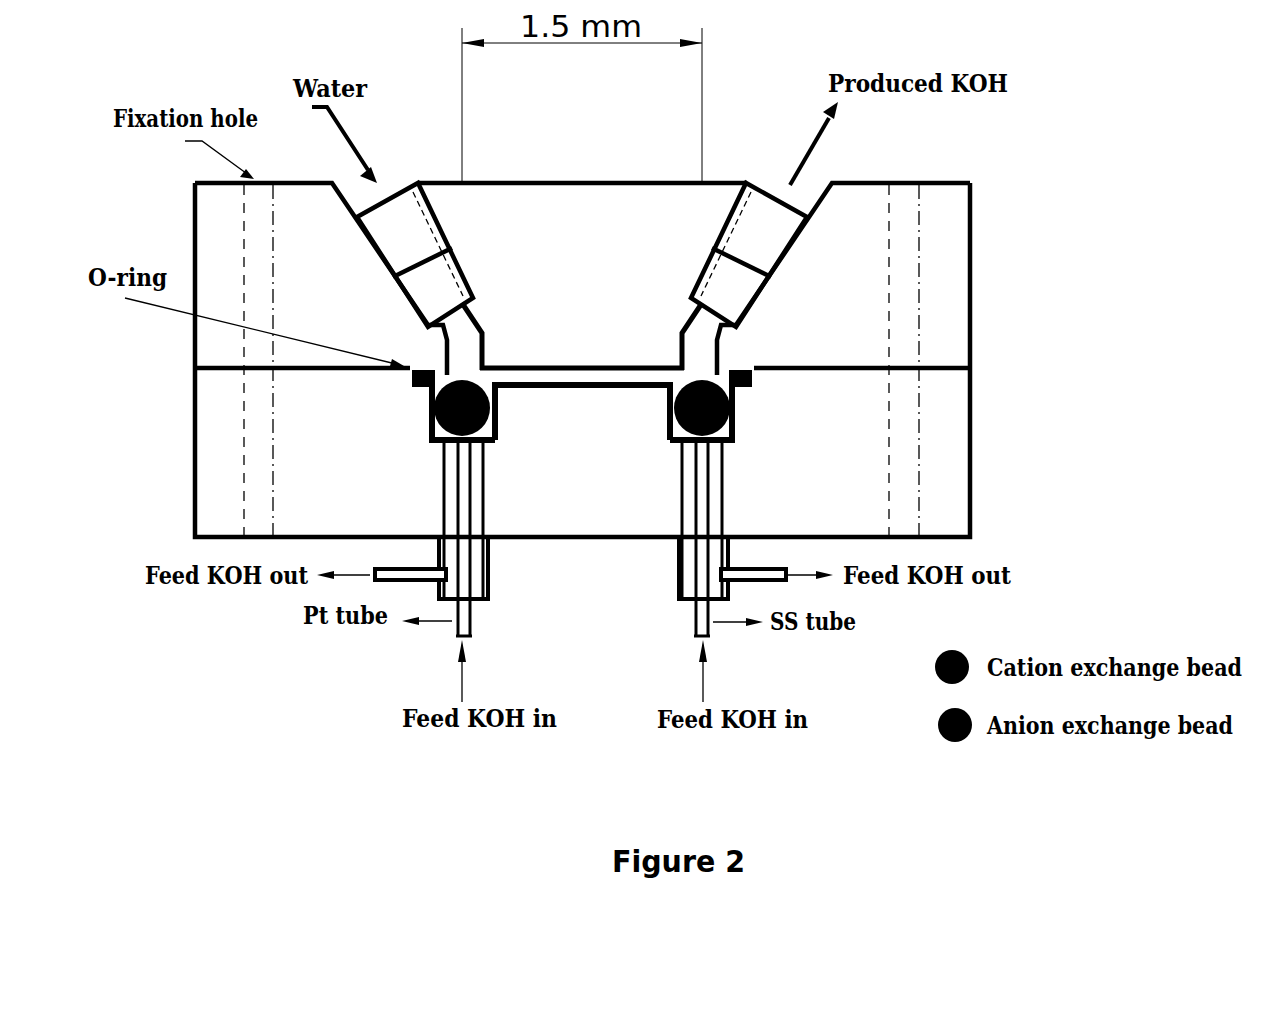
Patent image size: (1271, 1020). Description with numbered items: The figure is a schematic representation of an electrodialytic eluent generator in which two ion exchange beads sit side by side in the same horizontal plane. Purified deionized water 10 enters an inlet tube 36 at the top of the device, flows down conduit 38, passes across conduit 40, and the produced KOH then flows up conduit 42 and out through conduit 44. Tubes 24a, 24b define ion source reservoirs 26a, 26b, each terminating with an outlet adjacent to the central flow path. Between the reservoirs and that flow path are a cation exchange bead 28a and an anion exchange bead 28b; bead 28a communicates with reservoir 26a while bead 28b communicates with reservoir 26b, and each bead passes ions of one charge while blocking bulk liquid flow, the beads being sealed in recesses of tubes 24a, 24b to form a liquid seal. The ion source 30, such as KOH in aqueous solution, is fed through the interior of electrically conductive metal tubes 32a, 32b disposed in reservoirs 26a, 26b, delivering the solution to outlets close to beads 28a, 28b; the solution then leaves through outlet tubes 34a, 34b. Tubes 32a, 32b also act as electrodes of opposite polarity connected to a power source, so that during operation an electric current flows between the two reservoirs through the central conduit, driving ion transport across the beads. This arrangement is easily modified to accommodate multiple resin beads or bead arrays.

The DI water 10 is at (582, 290).
The inlet tube 36 is at (388, 188).
The outlet conduit 44 is at (802, 232).
The conduit 38 is at (482, 333).
The conduit 40 is at (570, 363).
The conduit 42 is at (725, 342).
The cation exchange bead 28a is at (430, 412).
The anion exchange bead 28b is at (735, 413).
The ion source reservoir 26a is at (452, 473).
The ion source reservoir 26b is at (718, 470).
The tube 24a is at (490, 567).
The tube 24b is at (677, 563).
The outlet tube 34a is at (388, 565).
The outlet tube 34b is at (760, 567).
The electrically conductive tube 32a is at (472, 622).
The electrically conductive tube 32b is at (713, 628).
The ion source 30 is at (508, 700).